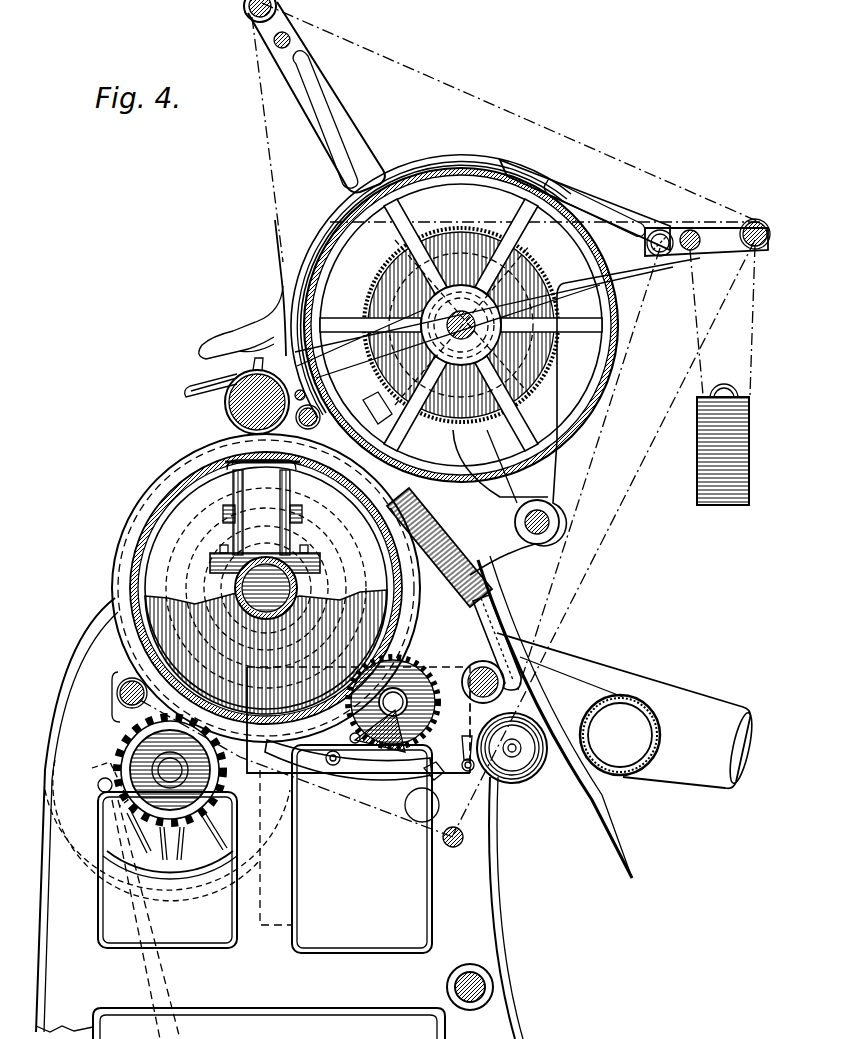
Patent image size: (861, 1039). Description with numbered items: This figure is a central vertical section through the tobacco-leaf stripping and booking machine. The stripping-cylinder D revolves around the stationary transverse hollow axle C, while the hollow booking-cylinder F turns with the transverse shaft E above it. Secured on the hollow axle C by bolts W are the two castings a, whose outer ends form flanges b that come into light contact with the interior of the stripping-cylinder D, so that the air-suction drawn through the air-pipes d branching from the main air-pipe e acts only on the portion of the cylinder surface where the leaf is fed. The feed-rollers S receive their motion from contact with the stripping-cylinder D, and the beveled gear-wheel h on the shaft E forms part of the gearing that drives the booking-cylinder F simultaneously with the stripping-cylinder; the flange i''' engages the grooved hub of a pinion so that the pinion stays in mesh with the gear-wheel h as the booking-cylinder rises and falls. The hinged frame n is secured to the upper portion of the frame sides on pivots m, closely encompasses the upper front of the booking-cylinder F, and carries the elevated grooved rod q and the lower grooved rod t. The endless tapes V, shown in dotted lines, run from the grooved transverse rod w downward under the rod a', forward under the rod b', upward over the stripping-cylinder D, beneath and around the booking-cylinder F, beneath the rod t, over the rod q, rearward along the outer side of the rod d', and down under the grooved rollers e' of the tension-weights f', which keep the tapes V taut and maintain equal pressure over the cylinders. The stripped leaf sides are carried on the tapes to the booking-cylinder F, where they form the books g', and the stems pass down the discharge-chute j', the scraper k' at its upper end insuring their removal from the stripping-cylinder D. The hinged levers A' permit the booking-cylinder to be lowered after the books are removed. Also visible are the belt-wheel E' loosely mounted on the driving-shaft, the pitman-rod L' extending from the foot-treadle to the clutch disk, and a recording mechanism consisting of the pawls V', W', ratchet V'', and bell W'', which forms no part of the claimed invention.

The rod q is at (252, 18).
The endless tapes V is at (450, 420).
The books g' is at (431, 269).
The booking-cylinder F is at (461, 325).
The transverse shaft E is at (484, 325).
The flange i''' is at (448, 338).
The pivots m is at (586, 214).
The grooved transverse rod w is at (700, 240).
The grooved transverse rod d' is at (707, 249).
The grooved rollers e' is at (724, 380).
The tension-weights f' is at (723, 451).
The frame n is at (246, 289).
The hinged levers A' is at (201, 385).
The feed-rollers S is at (225, 408).
The rod t is at (310, 417).
The scraper k' is at (251, 443).
The stripping-cylinder D is at (258, 588).
The castings a is at (262, 507).
The bolts W is at (265, 553).
The hollow axle C is at (266, 588).
The flanges b is at (317, 538).
The discharge-chute j' is at (497, 642).
The air-pipes d is at (626, 710).
The main air-pipe e is at (635, 735).
The ratchet V'' is at (393, 704).
The pawl W' is at (460, 750).
The bell W'' is at (476, 767).
The grooved transverse rod a' is at (453, 851).
The pawl V' is at (354, 757).
The grooved transverse rod b' is at (117, 699).
The beveled gear-wheel h is at (157, 770).
The belt-wheel E' is at (167, 843).
The pitman-rod L' is at (167, 915).